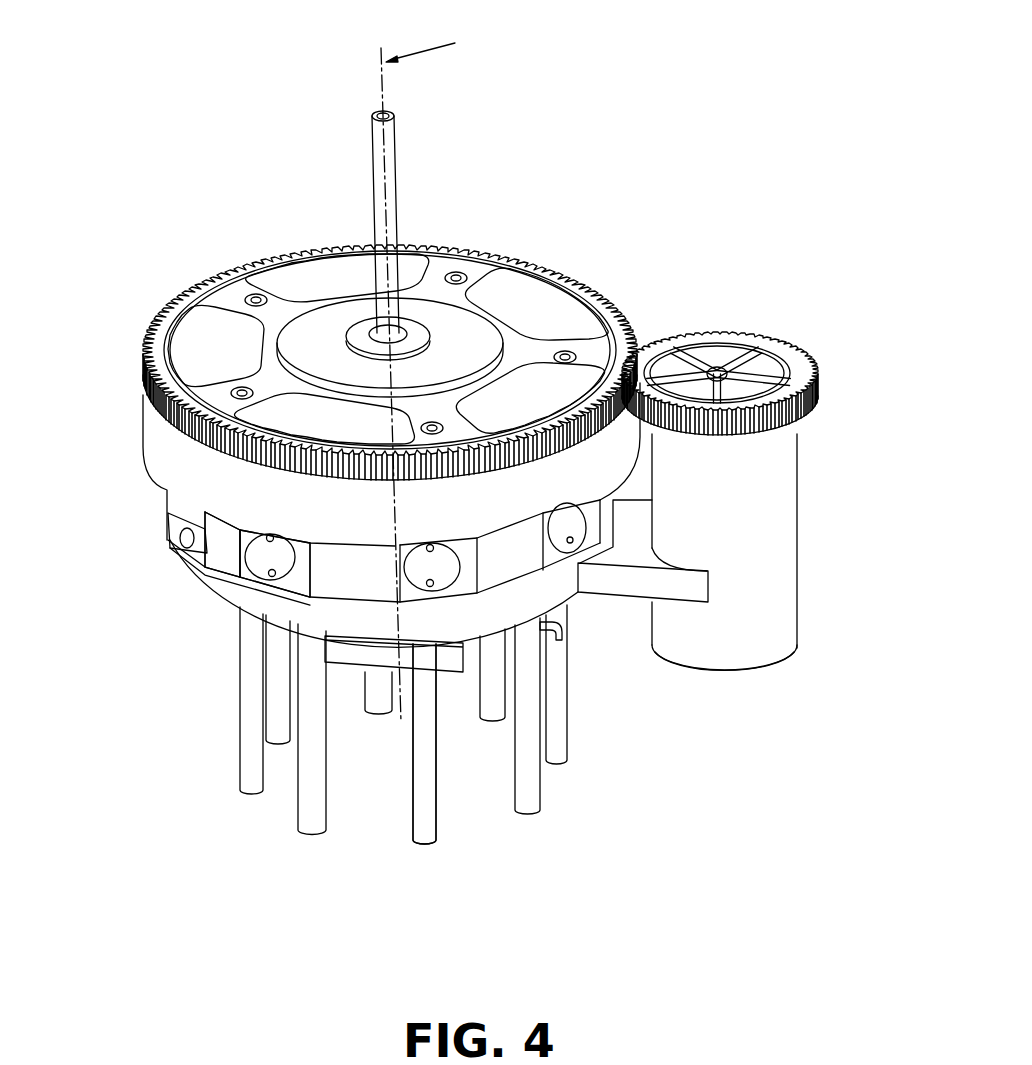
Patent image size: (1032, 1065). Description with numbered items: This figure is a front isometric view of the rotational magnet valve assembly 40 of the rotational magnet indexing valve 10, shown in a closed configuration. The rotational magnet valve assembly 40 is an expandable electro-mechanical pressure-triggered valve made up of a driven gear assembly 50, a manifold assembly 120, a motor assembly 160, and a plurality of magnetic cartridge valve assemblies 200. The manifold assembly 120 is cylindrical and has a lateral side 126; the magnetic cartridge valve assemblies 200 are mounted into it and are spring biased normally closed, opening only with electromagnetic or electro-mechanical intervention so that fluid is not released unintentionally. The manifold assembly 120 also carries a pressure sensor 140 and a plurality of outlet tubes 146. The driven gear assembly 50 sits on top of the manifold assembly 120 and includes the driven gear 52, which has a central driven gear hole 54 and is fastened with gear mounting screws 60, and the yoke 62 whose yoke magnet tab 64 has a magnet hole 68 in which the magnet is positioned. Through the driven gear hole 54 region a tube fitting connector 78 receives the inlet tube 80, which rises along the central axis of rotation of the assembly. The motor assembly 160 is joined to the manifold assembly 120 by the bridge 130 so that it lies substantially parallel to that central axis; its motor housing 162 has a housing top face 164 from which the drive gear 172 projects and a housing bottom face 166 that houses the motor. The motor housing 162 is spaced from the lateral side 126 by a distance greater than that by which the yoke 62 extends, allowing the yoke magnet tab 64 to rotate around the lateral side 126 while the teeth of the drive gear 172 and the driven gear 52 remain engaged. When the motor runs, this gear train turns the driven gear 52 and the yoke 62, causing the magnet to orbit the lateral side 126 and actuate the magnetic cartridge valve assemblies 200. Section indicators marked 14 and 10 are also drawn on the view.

The rotational magnet valve assembly 40 is at (156, 105).
The driven gear assembly 50 is at (668, 155).
The driven gear 52 is at (250, 268).
The driven gear hole 54 is at (287, 350).
The gear mounting screws 60 is at (575, 342).
The yoke 62 is at (160, 442).
The yoke magnet tab 64 is at (220, 548).
The magnet hole 68 is at (185, 535).
The tube fitting connector 78 is at (450, 320).
The inlet tube 80 is at (393, 165).
The manifold assembly 120 is at (369, 812).
The lateral side 126 is at (337, 610).
The bridge 130 is at (610, 592).
The pressure sensor 140 is at (445, 672).
The outlet tubes 146 is at (540, 795).
The motor assembly 160 is at (842, 454).
The motor housing 162 is at (800, 545).
The housing top face 164 is at (730, 350).
The housing bottom face 166 is at (772, 660).
The drive gear 172 is at (807, 353).
The magnetic cartridge valve assemblies 200 is at (251, 567).
The section line 14 is at (552, 253).
The rotational magnet indexing valve 10 is at (632, 302).